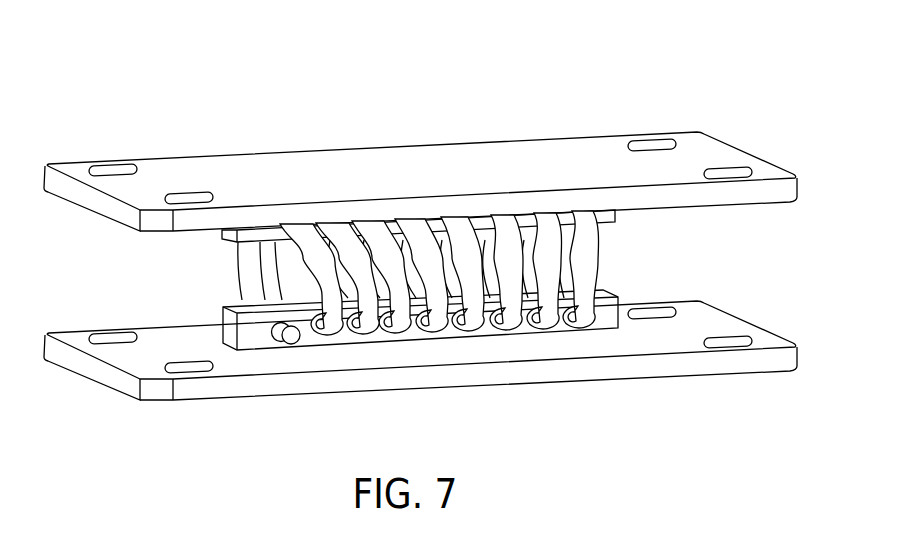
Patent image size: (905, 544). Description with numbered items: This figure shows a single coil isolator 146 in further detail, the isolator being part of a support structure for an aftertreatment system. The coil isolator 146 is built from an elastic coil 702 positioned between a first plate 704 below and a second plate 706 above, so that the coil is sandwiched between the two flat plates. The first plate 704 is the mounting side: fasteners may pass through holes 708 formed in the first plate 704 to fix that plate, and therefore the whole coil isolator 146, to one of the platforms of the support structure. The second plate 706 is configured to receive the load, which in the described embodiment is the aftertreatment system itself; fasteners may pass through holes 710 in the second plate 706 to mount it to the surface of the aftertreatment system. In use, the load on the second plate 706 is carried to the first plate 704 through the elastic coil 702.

The vibration isolator assembly 146 is at (750, 57).
The spring leaves 702 is at (556, 270).
The bottom plate 704 is at (420, 378).
The top plate 706 is at (420, 157).
The mounting slot of bottom plate 708 is at (731, 349).
The mounting slot of top plate 710 is at (651, 134).